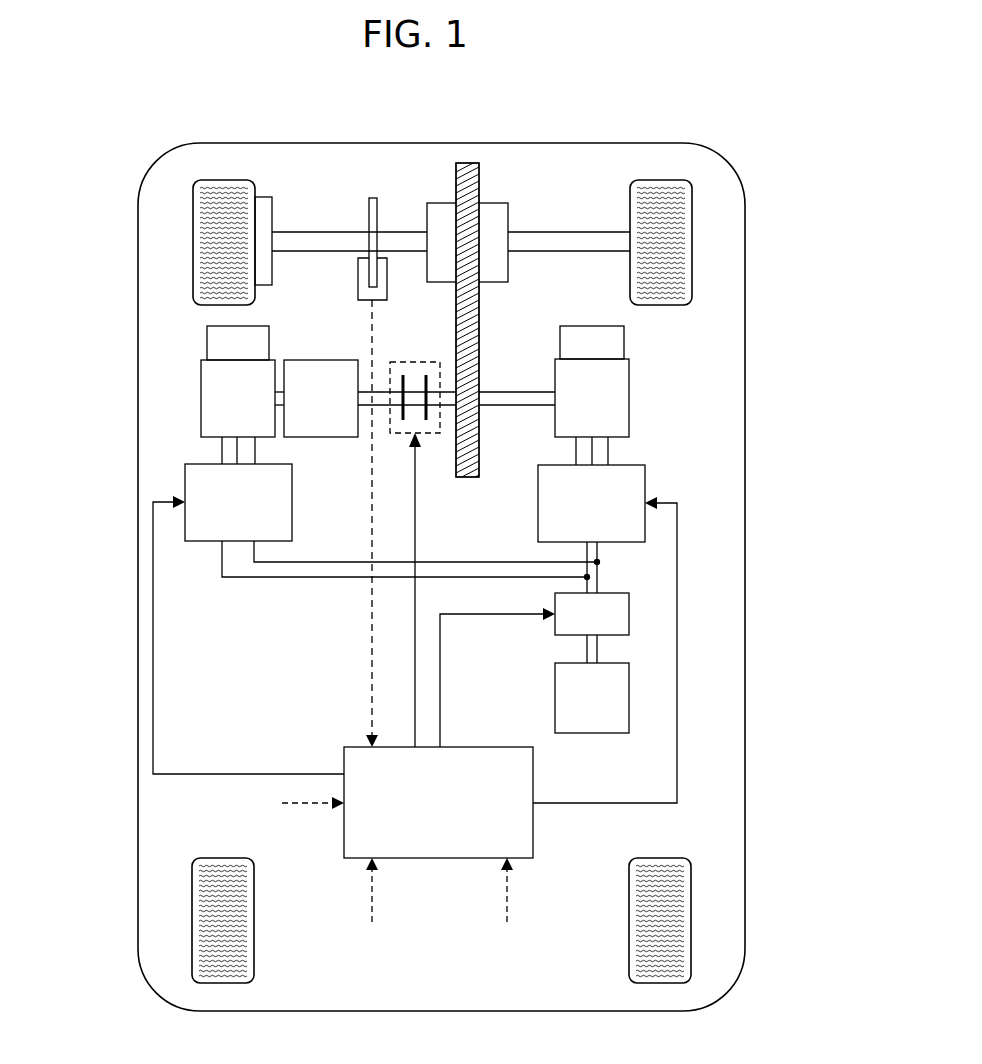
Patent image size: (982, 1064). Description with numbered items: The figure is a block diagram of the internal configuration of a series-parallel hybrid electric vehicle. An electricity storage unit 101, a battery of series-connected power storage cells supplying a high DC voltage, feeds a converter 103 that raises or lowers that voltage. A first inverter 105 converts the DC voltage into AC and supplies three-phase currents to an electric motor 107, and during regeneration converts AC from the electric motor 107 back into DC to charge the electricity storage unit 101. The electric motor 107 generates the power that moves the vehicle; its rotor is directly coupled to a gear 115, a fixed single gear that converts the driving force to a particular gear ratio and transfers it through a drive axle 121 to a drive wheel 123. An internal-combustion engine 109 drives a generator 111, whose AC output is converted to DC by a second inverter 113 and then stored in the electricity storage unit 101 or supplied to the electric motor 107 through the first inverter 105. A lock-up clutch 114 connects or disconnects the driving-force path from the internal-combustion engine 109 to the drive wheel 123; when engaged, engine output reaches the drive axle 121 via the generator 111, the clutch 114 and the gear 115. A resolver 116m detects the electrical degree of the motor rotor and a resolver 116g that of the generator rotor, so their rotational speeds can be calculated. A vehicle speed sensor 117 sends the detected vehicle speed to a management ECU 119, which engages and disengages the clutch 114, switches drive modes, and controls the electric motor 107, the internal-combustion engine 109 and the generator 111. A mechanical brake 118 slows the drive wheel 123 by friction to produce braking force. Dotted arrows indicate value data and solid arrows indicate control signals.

The electricity storage unit 101 is at (629, 697).
The converter 103 is at (629, 612).
The first inverter 105 is at (645, 488).
The electric motor 107 is at (629, 398).
The internal-combustion engine 109 is at (335, 437).
The generator 111 is at (201, 395).
The second inverter 113 is at (185, 483).
The lock-up clutch 114 is at (415, 362).
The gearbox 115 is at (508, 222).
The resolver 116g is at (207, 341).
The resolver 116m is at (590, 326).
The vehicle speed sensor 117 is at (357, 292).
The mechanical brake 118 is at (262, 207).
The management ECU 119 is at (478, 747).
The drive axle 121 is at (301, 242).
The drive wheel 123 is at (198, 237).